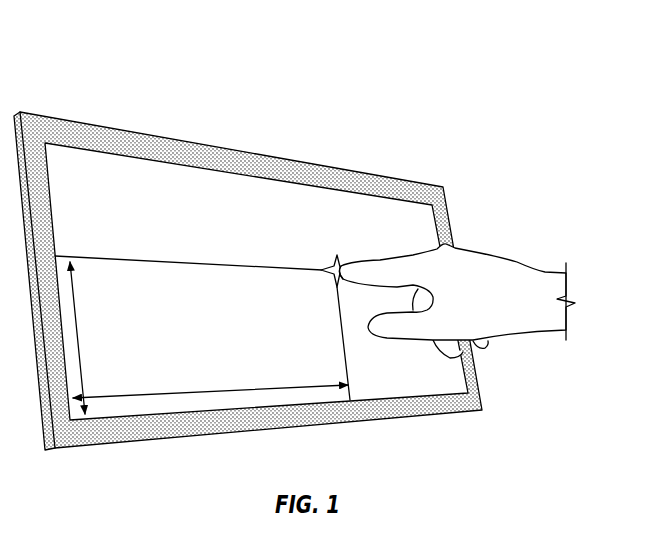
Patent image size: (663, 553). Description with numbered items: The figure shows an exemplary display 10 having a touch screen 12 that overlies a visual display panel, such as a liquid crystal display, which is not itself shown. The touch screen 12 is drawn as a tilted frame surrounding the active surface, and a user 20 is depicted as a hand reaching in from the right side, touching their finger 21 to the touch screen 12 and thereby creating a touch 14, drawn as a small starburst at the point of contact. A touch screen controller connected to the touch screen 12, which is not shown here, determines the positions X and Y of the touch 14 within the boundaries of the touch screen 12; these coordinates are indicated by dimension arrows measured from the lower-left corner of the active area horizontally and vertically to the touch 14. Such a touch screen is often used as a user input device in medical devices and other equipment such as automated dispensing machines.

The display 10 is at (294, 230).
The touch screen 12 is at (255, 186).
The touch 14 is at (337, 257).
The user 20 is at (467, 257).
The finger 21 is at (347, 263).